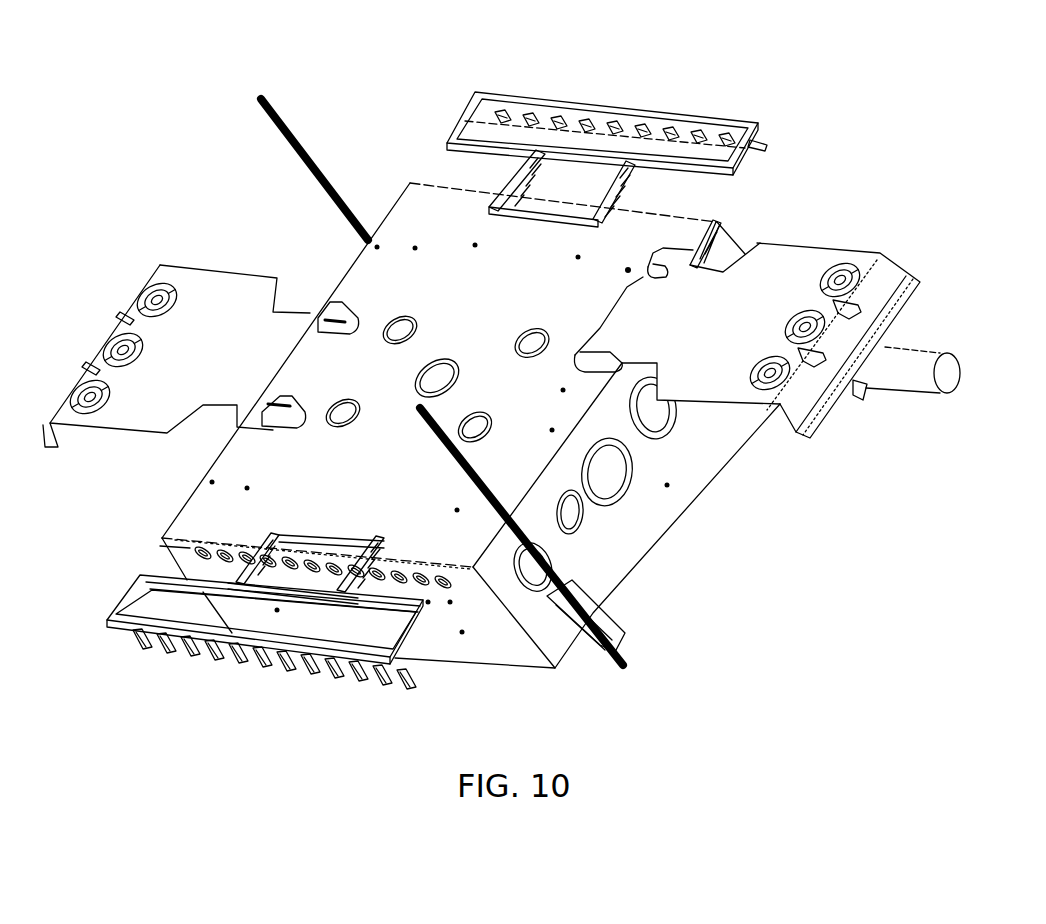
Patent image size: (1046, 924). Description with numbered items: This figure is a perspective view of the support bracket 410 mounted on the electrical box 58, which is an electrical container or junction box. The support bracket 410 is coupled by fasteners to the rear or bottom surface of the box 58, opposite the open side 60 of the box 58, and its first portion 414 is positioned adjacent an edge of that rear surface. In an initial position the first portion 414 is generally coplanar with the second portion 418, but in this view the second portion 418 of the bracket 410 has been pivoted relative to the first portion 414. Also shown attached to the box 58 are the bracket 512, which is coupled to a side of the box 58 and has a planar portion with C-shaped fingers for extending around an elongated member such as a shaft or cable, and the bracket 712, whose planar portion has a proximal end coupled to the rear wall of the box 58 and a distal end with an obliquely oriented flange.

The electrical box 58 is at (413, 178).
The open side 60 is at (228, 508).
The support bracket 410 is at (145, 562).
The bracket 712 is at (780, 267).
The second portion 418 is at (663, 115).
The first portion 414 is at (550, 208).
The bracket 512 is at (558, 617).